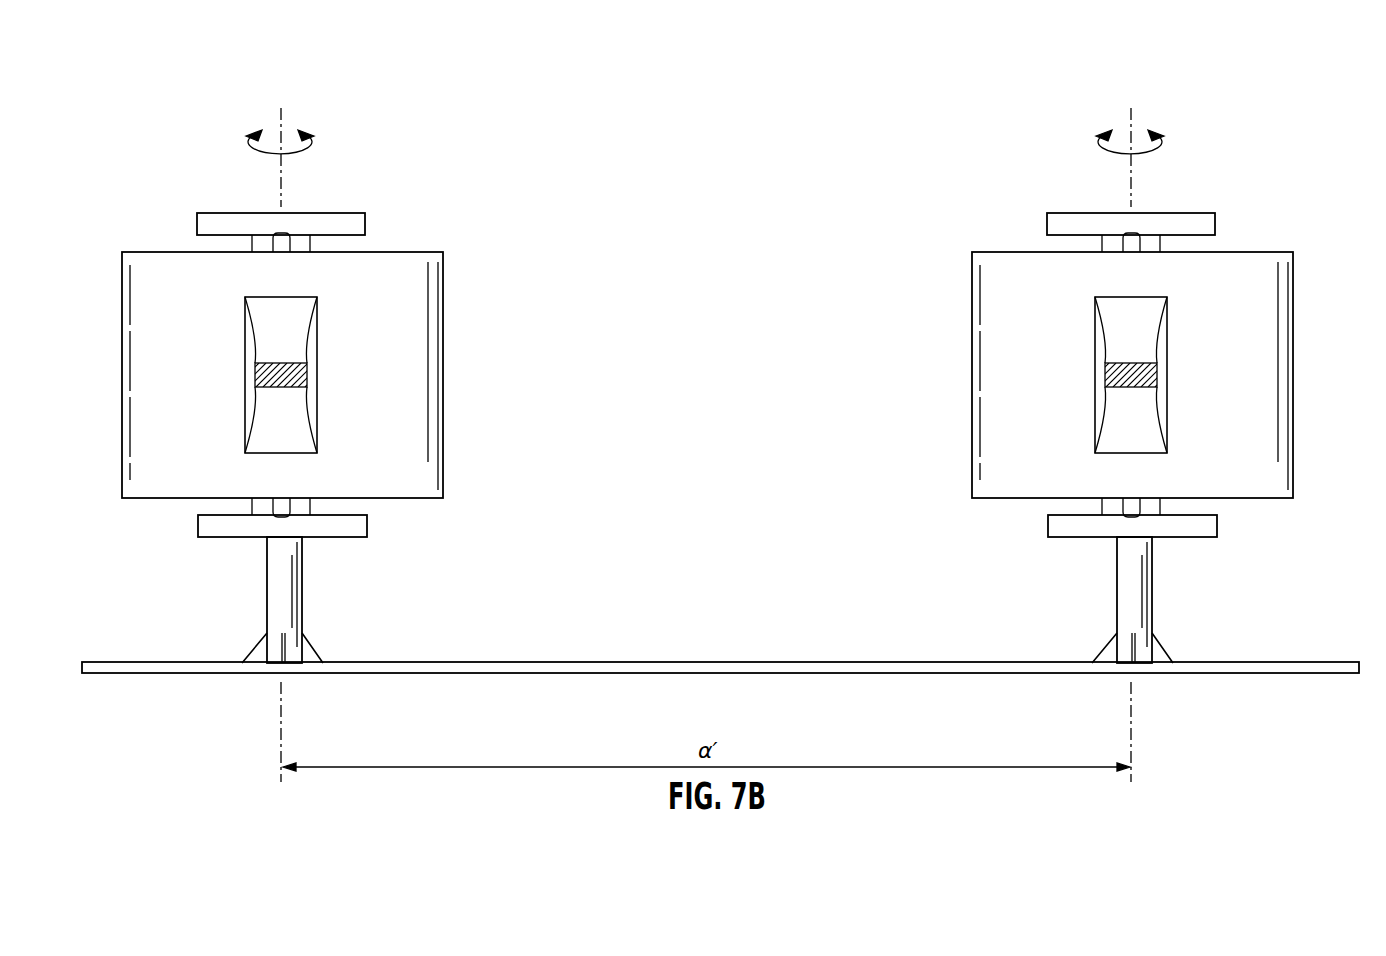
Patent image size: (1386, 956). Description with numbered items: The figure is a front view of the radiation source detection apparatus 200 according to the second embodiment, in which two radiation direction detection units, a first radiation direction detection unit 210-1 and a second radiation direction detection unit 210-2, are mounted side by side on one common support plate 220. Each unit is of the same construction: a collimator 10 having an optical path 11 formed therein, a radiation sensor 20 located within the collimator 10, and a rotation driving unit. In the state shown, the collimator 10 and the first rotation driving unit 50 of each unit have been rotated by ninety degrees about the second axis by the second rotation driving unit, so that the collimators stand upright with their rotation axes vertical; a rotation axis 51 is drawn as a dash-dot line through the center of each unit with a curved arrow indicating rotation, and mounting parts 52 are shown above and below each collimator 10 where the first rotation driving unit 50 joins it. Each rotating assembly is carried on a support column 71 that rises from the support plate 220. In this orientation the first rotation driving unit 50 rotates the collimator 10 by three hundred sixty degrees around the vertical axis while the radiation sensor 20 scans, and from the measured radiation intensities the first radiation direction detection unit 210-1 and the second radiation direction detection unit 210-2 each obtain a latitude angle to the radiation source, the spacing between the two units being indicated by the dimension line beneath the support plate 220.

The collimator 10 is at (443, 283).
The optical path 11 is at (303, 323).
The radiation sensor 20 is at (308, 372).
The first rotation driving unit 50 is at (286, 240).
The rotation axis 51 is at (277, 187).
The bearing mount 52 is at (310, 246).
The support column 71 is at (273, 590).
The radiation source detection apparatus 200 is at (738, 146).
The first radiation direction detection unit 210-1 is at (431, 171).
The second radiation direction detection unit 210-2 is at (1275, 173).
The support plate 220 is at (795, 668).